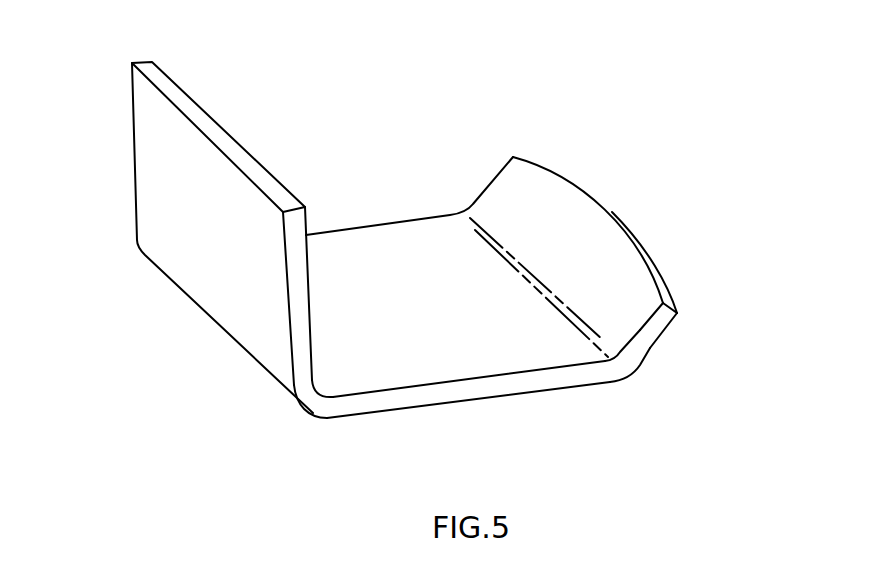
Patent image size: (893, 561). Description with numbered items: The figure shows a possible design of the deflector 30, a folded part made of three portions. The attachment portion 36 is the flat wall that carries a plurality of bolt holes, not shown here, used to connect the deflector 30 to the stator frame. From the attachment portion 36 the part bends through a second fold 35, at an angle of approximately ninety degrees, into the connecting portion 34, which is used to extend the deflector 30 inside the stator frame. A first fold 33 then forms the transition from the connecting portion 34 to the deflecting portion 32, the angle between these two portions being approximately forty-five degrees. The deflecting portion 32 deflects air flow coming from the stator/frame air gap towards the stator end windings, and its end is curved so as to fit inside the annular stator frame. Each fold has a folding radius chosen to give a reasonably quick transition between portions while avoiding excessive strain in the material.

The deflector 30 is at (400, 120).
The deflecting portion 32 is at (658, 330).
The first fold 33 is at (618, 372).
The connecting portion 34 is at (473, 390).
The second fold 35 is at (313, 403).
The attachment portion 36 is at (183, 175).